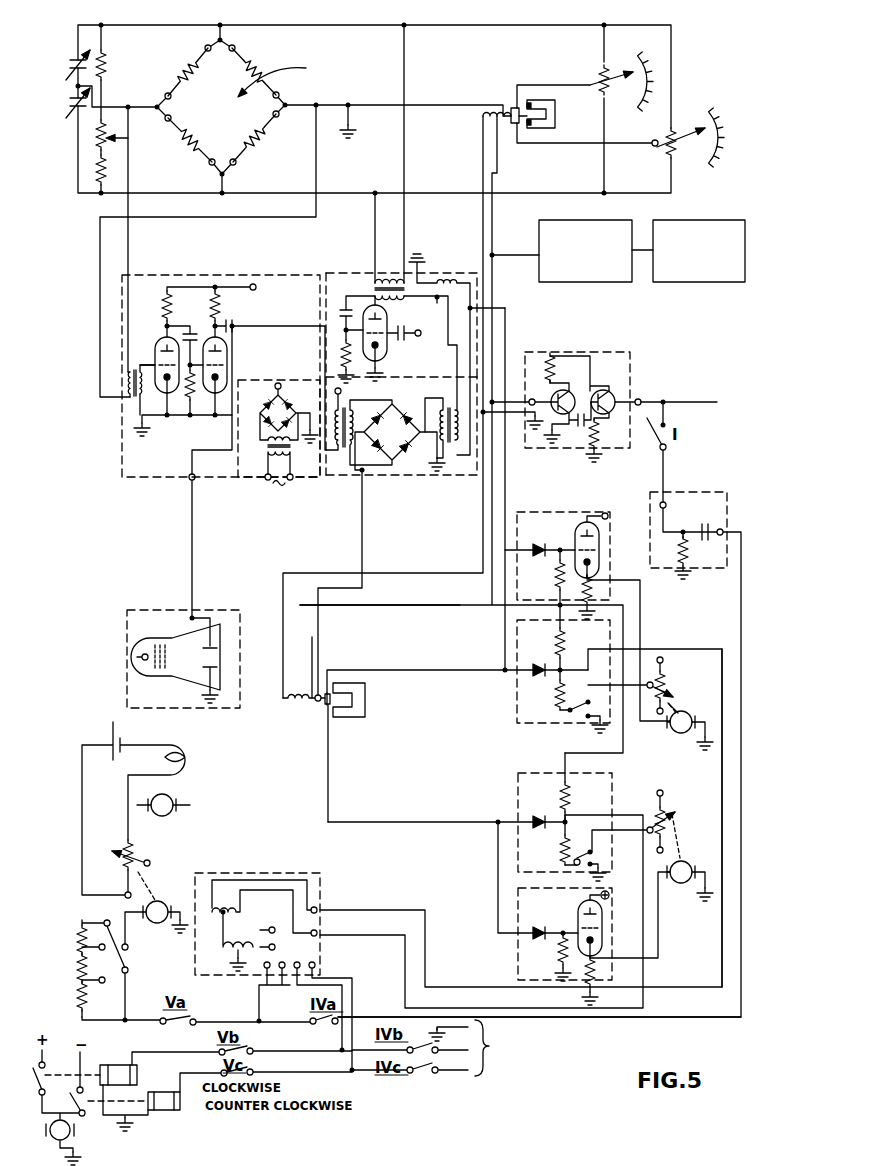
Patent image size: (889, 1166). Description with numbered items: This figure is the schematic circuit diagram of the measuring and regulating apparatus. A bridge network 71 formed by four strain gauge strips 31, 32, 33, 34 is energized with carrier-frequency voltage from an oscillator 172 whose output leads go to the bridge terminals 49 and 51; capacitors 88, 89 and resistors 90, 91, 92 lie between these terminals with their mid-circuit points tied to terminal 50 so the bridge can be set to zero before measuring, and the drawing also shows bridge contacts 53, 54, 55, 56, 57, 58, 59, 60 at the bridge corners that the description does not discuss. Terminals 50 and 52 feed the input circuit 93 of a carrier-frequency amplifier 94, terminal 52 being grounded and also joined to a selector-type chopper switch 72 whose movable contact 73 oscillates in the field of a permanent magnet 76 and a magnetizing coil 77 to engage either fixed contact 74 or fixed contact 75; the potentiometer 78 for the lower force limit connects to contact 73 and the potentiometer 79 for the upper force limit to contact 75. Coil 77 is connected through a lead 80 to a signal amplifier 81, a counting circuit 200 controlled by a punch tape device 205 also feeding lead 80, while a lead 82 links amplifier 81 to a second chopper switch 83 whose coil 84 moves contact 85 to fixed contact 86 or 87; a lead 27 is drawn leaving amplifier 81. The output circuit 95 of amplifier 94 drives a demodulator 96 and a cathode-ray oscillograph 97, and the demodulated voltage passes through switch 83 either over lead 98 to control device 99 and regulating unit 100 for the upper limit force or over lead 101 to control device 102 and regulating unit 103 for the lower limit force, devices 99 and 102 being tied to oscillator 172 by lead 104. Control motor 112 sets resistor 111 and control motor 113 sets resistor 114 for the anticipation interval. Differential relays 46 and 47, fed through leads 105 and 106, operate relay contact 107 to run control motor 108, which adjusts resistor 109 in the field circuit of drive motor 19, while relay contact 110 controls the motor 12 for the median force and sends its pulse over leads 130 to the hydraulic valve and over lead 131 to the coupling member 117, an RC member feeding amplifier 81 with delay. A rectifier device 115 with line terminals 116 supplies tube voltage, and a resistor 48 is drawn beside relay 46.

The bridge terminal 49 is at (219, 17).
The bridge terminal 50 is at (179, 74).
The bridge terminal 51 is at (223, 194).
The bridge terminal 52 is at (296, 115).
The contact 53 is at (205, 45).
The contact 54 is at (238, 45).
The contact 55 is at (178, 97).
The contact 56 is at (178, 117).
The contact 57 is at (241, 167).
The contact 58 is at (220, 157).
The contact 59 is at (268, 111).
The contact 60 is at (287, 92).
The strain gauge strip 31 is at (184, 72).
The strain gauge strip 32 is at (187, 140).
The strain gauge strip 33 is at (261, 138).
The strain gauge strip 34 is at (258, 71).
The bridge network 71 is at (282, 79).
The capacitor 88 is at (65, 64).
The capacitor 89 is at (67, 102).
The resistor 90 is at (113, 65).
The resistor 91 is at (104, 133).
The resistor 92 is at (93, 171).
The selector-type chopper switch 72 is at (541, 100).
The movable contact 73 is at (518, 126).
The fixed contact 74 is at (532, 121).
The fixed contact 75 is at (517, 100).
The permanent magnet 76 is at (557, 116).
The magnetizing coil 77 is at (483, 125).
The adjusting potentiometer 78 is at (664, 146).
The adjusting potentiometer 79 is at (600, 78).
The lead 80 is at (494, 258).
The counting circuit 200 is at (589, 281).
The punch tape device 205 is at (701, 281).
The signal amplifier 81 is at (605, 368).
The output lead 27 is at (705, 400).
The coupling member 117 is at (687, 512).
The amplifier 94 is at (147, 292).
The input circuit 93 is at (115, 404).
The output circuit 95 is at (262, 324).
The rectifier device 115 is at (252, 463).
The terminals 116 is at (268, 486).
The oscillator 172 is at (350, 287).
The demodulator 96 is at (338, 464).
The cathode-ray oscillograph 97 is at (167, 623).
The lead 82 is at (463, 606).
The lead 98 is at (470, 671).
The lead 104 is at (510, 456).
The switch coil 84 is at (282, 706).
The movable contact 85 is at (320, 704).
The fixed contact 86 is at (331, 686).
The fixed contact 87 is at (327, 709).
The chopper switch 83 is at (349, 701).
The regulating unit 100 is at (558, 527).
The control device 99 is at (515, 708).
The resistor 111 is at (664, 686).
The control motor 112 is at (678, 713).
The lead 101 is at (410, 821).
The control device 102 is at (525, 800).
The resistor 114 is at (667, 796).
The control motor 113 is at (681, 884).
The connecting lead 105 is at (720, 800).
The regulating unit 103 is at (530, 908).
The connecting lead 106 is at (643, 968).
The drive motor 19 is at (174, 798).
The resistor 109 is at (122, 870).
The control motor 108 is at (160, 900).
The tapped resistor 48 is at (116, 968).
The differential relay 46 is at (223, 903).
The differential relay 47 is at (225, 947).
The relay contact 107 is at (283, 943).
The relay contact 110 is at (321, 946).
The motor 12 is at (76, 1135).
The leads 130 is at (454, 1048).
The lead 131 is at (553, 1018).